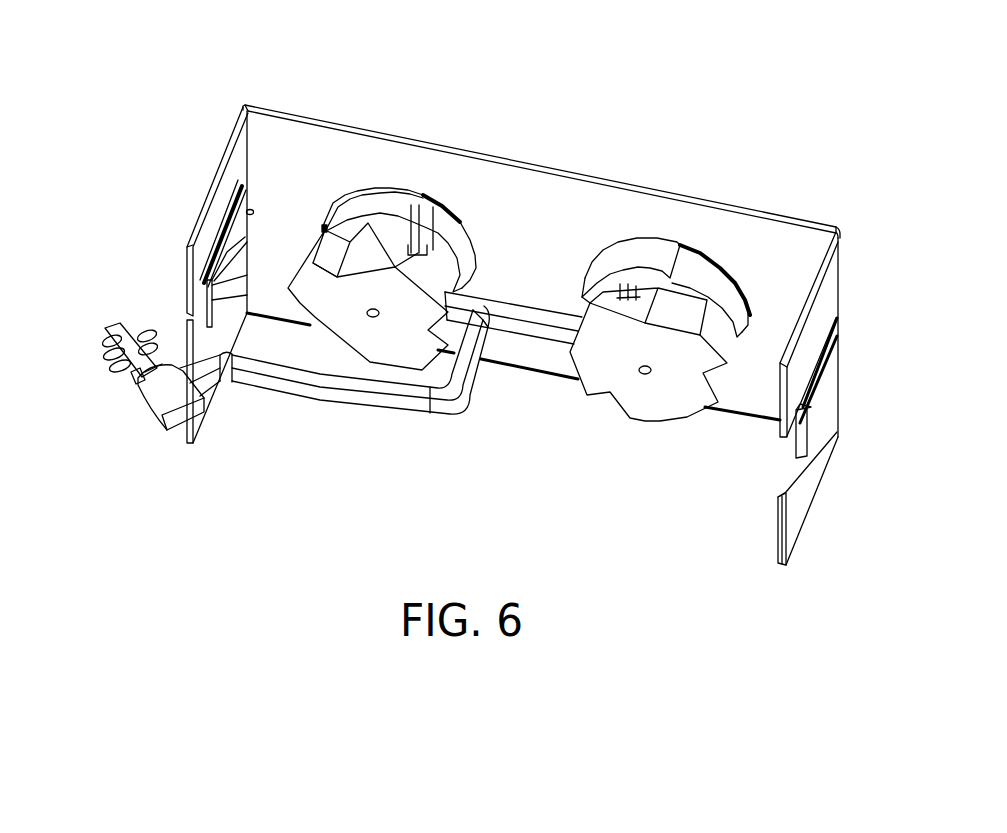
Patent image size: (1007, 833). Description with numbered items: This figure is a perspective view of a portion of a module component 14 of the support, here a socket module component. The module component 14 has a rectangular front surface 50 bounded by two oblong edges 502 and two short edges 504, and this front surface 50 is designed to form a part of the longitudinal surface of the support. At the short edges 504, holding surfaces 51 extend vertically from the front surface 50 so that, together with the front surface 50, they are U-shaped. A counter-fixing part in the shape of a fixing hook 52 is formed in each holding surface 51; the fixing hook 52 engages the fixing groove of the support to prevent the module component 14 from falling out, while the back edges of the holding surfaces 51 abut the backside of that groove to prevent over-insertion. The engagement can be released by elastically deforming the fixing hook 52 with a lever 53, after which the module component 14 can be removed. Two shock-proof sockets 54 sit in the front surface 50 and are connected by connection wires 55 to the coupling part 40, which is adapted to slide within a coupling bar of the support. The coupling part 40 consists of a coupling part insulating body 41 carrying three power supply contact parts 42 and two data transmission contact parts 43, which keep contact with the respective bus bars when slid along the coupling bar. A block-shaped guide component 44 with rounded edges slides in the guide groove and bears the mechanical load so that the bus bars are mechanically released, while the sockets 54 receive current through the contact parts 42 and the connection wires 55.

The module component 14 is at (513, 127).
The front surface 50 is at (559, 244).
The oblong edges 502 is at (585, 177).
The short edges 504 is at (247, 153).
The holding surfaces 51 is at (230, 127).
The fixing hook 52 is at (196, 326).
The lever 53 is at (223, 240).
The shock-proof sockets 54 is at (380, 207).
The connection wires 55 is at (360, 410).
The coupling part 40 is at (91, 373).
The coupling part insulating body 41 is at (108, 326).
The power supply contact parts 42 is at (120, 372).
The data transmission contact parts 43 is at (145, 332).
The guide component 44 is at (123, 395).